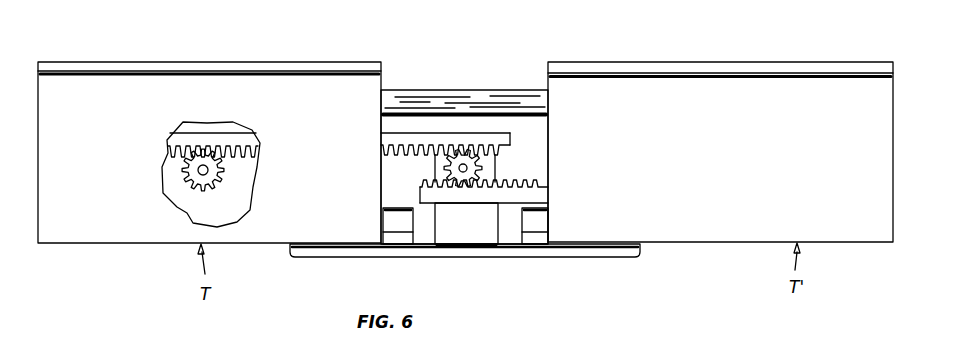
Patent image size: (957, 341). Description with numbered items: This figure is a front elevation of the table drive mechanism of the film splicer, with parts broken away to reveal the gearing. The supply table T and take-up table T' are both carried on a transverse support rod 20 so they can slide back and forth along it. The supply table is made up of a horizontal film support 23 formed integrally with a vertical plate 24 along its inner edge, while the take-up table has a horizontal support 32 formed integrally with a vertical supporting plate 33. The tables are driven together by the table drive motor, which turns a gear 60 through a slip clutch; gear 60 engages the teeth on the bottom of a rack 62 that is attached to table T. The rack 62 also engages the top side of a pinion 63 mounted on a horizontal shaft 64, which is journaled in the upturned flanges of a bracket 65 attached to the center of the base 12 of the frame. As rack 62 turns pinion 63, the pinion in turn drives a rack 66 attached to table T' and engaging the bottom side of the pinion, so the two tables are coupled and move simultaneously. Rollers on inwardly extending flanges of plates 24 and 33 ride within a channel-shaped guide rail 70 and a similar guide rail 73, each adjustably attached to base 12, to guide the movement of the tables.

The base 12 is at (392, 252).
The transverse support rod 20 is at (473, 101).
The horizontal film support 23 is at (240, 68).
The vertical plate 24 is at (80, 234).
The horizontal support 32 is at (755, 68).
The vertical supporting plate 33 is at (700, 236).
The gear 60 is at (195, 175).
The rack 62 is at (200, 140).
The pinion 63 is at (480, 175).
The horizontal shaft 64 is at (449, 167).
The bracket 65 is at (482, 236).
The rack 66 is at (487, 198).
The channel-shaped guide rail 70 is at (393, 218).
The guide rail 73 is at (545, 220).